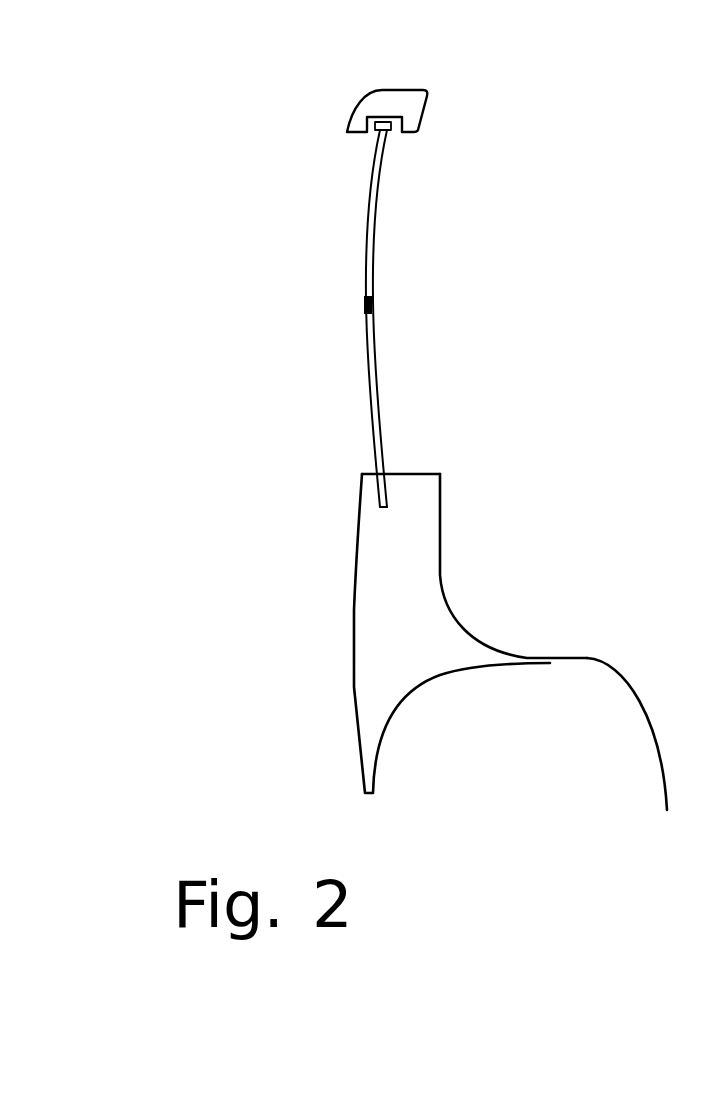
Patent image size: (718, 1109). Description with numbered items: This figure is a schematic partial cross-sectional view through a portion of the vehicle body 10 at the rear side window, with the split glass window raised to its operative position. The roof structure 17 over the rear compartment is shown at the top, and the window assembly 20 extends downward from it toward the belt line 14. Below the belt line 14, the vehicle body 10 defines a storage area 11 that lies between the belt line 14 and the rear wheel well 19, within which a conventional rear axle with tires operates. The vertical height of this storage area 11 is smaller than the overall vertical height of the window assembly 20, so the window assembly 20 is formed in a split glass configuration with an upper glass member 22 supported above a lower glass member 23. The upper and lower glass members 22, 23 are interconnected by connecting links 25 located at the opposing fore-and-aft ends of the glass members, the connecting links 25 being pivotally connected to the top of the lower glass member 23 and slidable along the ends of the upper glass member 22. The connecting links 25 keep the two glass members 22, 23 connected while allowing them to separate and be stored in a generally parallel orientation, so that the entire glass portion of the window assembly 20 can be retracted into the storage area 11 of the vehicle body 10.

The vehicle body 10 is at (466, 649).
The storage area 11 is at (414, 592).
The belt line 14 is at (375, 473).
The roof structure 17 is at (428, 98).
The rear wheel well 19 is at (660, 777).
The window assembly 20 is at (466, 469).
The upper glass member 22 is at (384, 318).
The lower glass member 23 is at (374, 398).
The connecting link 25 is at (372, 307).